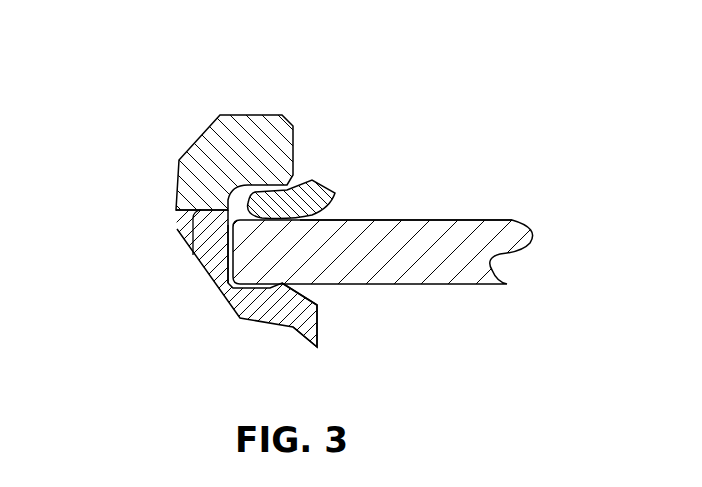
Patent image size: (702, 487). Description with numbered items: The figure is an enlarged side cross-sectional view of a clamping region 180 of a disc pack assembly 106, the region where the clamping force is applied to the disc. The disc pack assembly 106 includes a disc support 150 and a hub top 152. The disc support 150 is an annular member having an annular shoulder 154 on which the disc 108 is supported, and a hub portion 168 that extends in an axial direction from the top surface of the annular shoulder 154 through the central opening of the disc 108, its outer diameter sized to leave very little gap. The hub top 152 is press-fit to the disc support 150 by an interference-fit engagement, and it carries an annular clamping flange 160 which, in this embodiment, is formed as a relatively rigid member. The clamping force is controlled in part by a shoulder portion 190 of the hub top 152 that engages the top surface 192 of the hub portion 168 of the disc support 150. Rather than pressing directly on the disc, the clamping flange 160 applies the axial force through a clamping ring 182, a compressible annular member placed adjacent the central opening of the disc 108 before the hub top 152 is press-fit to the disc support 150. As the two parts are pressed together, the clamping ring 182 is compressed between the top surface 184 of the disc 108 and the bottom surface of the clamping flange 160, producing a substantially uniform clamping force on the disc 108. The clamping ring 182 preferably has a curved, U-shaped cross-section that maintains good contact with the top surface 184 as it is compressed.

The disc pack assembly 106 is at (153, 137).
The disc 108 is at (472, 277).
The disc support 150 is at (270, 305).
The hub top 152 is at (193, 172).
The annular shoulder 154 is at (307, 310).
The annular clamping flange 160 is at (252, 128).
The hub portion 168 is at (213, 245).
The clamping region 180 is at (323, 102).
The clamping ring 182 is at (318, 190).
The top surface of disc 184 is at (478, 220).
The shoulder portion 190 is at (211, 203).
The top surface of hub portion 192 is at (200, 218).